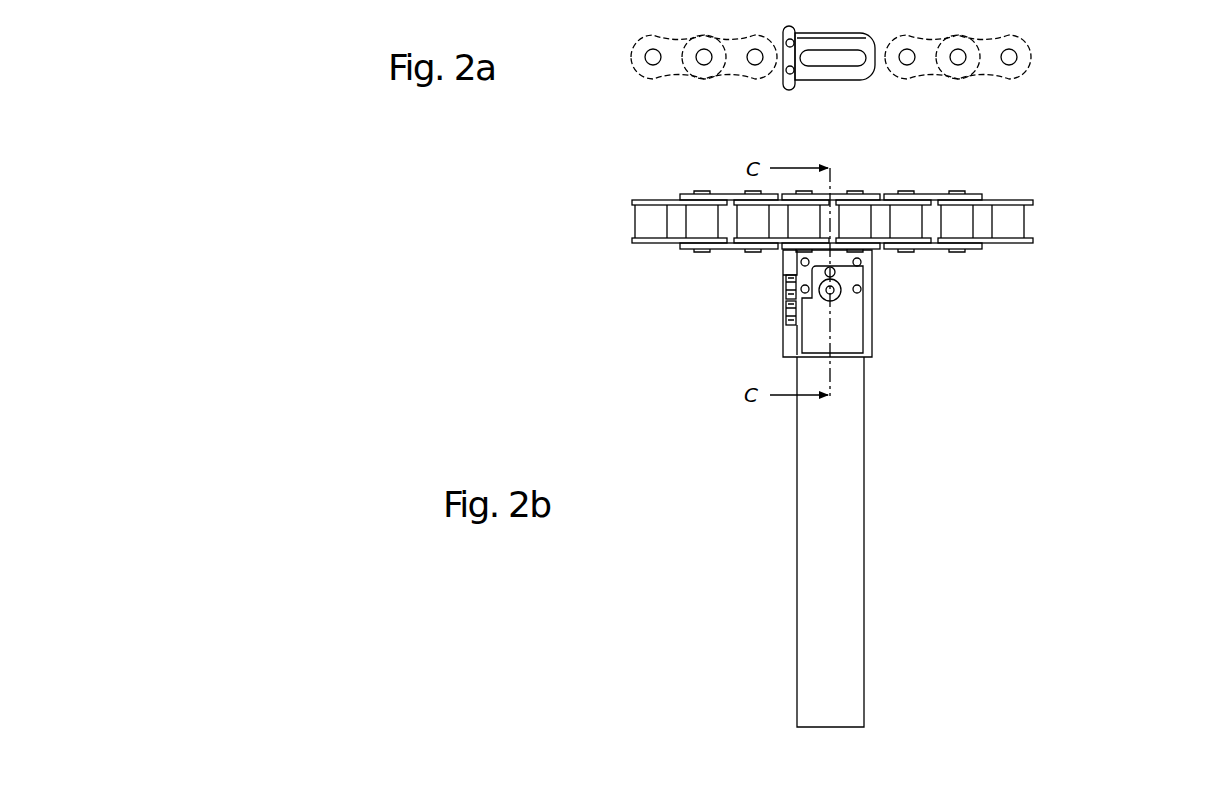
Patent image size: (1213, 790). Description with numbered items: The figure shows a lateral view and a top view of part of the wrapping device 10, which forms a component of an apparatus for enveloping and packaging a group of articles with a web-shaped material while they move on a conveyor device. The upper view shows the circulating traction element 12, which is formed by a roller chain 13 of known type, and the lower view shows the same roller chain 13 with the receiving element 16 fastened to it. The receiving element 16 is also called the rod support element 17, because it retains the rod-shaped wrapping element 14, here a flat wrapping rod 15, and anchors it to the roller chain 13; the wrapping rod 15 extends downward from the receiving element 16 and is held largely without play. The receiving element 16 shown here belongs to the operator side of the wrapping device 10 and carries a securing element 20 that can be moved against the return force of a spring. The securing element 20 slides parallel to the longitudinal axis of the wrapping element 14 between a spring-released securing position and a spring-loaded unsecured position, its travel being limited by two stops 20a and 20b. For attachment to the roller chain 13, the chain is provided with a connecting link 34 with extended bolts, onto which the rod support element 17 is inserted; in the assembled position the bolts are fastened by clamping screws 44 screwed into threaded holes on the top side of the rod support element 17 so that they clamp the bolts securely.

In FIG. 2B, the wrapping device 10 is at (1110, 465).
In FIG. 2A, the traction element 12 is at (893, 83).
In FIG. 2B, the traction element 12 is at (817, 271).
In FIG. 2A, the roller chain 13 is at (1018, 68).
In FIG. 2B, the roller chain 13 is at (693, 222).
In FIG. 2B, the rod-shaped wrapping element 14 is at (892, 542).
In FIG. 2B, the flat wrapping rod 15 is at (858, 520).
In FIG. 2B, the receiving element 16 is at (888, 344).
In FIG. 2B, the rod support element 17 is at (877, 303).
In FIG. 2B, the securing element 20 is at (729, 337).
In FIG. 2B, the stop 20a is at (787, 280).
In FIG. 2B, the stop 20b is at (787, 310).
In FIG. 2B, the connecting link 34 is at (868, 186).
In FIG. 2B, the clamping screw 44 is at (858, 291).